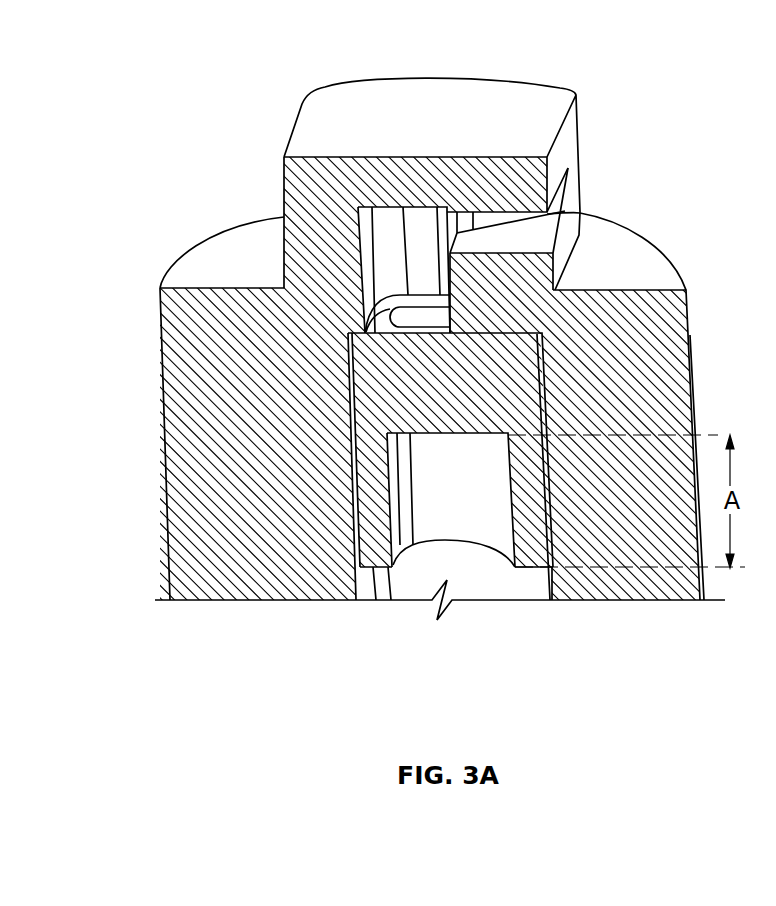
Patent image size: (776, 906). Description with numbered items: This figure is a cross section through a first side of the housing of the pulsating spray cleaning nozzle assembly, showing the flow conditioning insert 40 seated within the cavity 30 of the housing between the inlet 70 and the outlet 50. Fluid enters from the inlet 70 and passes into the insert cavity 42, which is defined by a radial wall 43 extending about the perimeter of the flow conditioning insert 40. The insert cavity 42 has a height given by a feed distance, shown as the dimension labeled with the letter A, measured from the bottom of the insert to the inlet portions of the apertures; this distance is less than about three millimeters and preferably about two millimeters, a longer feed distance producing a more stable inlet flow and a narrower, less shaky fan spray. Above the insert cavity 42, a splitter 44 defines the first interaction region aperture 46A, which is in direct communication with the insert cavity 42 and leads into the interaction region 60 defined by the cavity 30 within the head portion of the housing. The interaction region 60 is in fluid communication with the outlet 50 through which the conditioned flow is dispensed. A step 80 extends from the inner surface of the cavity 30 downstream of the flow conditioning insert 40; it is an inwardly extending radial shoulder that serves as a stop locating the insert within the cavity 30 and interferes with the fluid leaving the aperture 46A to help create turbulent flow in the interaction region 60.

The cavity 30 is at (490, 567).
The flow conditioning insert 40 is at (372, 373).
The insert cavity 42 is at (421, 468).
The radial wall 43 is at (364, 532).
The splitter 44 is at (365, 318).
The first interaction region aperture 46A is at (422, 318).
The outlet 50 is at (550, 230).
The interaction region 60 is at (383, 223).
The inlet 70 is at (410, 593).
The step 80 is at (455, 333).